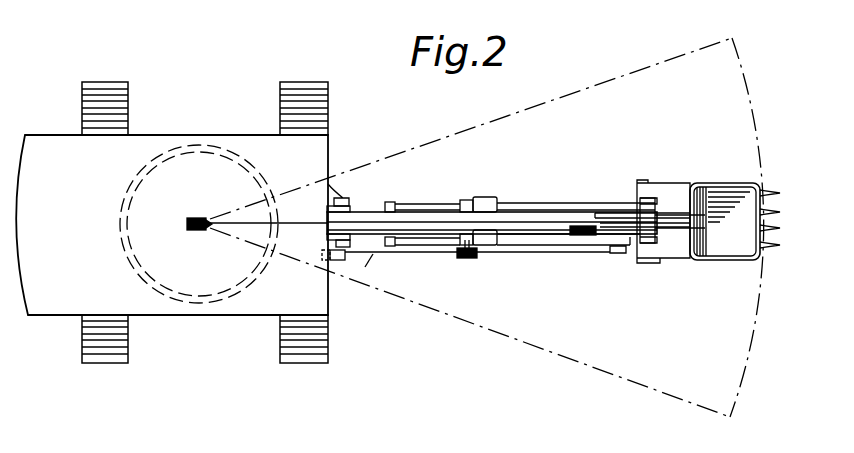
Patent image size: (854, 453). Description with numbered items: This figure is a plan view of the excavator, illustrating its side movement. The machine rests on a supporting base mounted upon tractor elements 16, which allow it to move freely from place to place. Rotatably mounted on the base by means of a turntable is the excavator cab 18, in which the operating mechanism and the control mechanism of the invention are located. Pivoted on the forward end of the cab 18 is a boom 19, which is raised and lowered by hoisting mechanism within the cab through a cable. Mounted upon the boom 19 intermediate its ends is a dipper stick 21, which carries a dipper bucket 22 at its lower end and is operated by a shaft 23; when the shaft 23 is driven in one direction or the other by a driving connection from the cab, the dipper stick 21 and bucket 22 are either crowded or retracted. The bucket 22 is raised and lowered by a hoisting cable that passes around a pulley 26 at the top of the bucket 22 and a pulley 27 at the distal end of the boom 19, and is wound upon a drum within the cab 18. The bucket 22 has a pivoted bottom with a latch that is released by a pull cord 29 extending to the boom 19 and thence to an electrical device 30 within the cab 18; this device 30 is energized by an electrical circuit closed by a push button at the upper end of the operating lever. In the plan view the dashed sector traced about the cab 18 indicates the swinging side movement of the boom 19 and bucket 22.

The tractor elements 16 is at (128, 108).
The excavator cab 18 is at (213, 135).
The boom 19 is at (426, 229).
The dipper stick 21 is at (520, 203).
The dipper bucket 22 is at (708, 186).
The shaft 23 is at (462, 256).
The pulley 26 is at (683, 210).
The pulley 27 is at (605, 218).
The pull cord 29 is at (556, 251).
The electrical device 30 is at (318, 257).